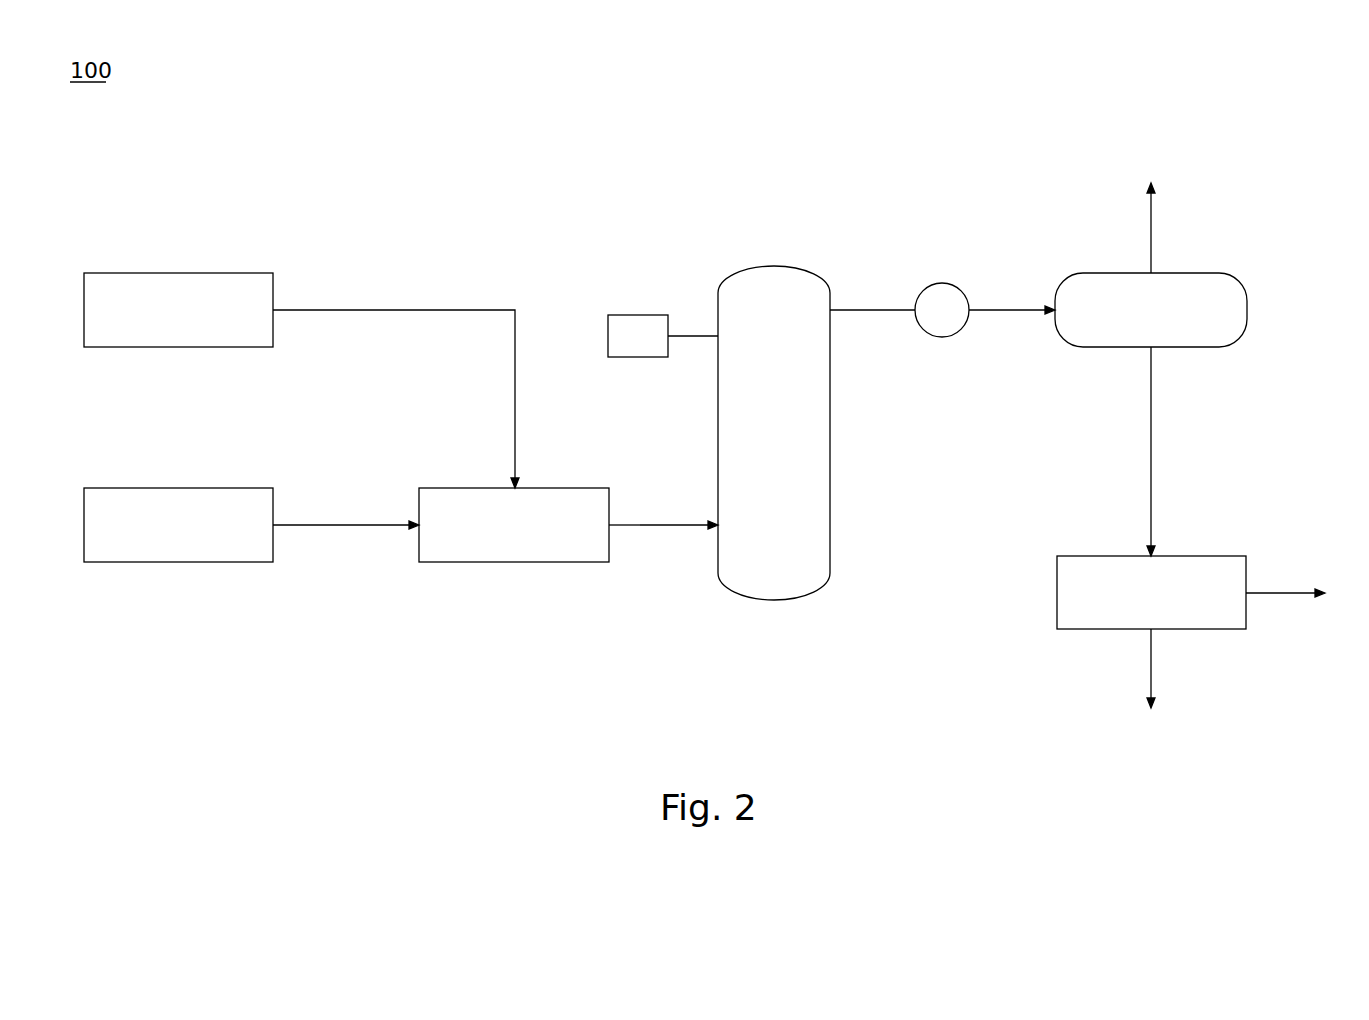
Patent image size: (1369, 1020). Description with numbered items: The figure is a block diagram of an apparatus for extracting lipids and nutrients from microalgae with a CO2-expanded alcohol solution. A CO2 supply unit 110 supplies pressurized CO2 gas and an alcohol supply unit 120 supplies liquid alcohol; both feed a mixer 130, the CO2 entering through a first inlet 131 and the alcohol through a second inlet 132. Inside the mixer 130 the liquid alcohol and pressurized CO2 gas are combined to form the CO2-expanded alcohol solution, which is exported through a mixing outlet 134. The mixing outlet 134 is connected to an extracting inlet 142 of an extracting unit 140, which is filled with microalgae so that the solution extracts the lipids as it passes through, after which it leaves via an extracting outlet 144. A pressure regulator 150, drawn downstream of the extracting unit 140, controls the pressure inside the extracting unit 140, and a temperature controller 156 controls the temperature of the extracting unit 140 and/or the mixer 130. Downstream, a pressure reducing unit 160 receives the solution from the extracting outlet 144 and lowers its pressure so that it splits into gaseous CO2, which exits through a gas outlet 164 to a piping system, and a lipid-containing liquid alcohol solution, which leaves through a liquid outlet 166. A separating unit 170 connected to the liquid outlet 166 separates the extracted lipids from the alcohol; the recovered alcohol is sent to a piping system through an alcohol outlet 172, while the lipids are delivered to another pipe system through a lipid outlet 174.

The CO2 supply unit 110 is at (178, 273).
The alcohol supply unit 120 is at (178, 488).
The mixer 130 is at (512, 562).
The first inlet 131 is at (512, 488).
The second inlet 132 is at (418, 523).
The mixing outlet 134 is at (610, 528).
The extracting unit 140 is at (742, 272).
The extracting inlet 142 is at (718, 517).
The extracting outlet 144 is at (832, 305).
The pressure regulator 150 is at (950, 283).
The temperature controller 156 is at (622, 315).
The pressure reducing unit 160 is at (1217, 272).
The gas outlet 164 is at (1153, 272).
The liquid outlet 166 is at (1152, 348).
The separating unit 170 is at (1203, 555).
The alcohol outlet 172 is at (1247, 598).
The lipid outlet 174 is at (1150, 630).